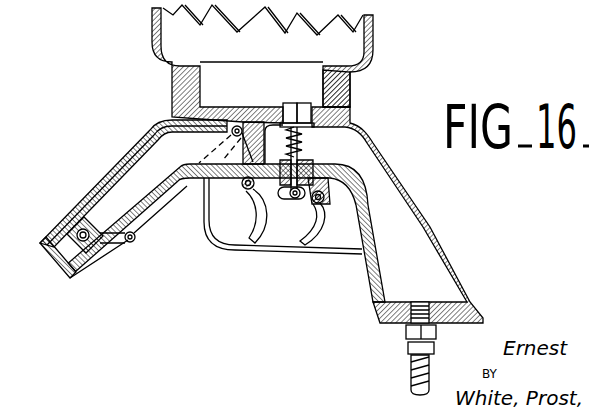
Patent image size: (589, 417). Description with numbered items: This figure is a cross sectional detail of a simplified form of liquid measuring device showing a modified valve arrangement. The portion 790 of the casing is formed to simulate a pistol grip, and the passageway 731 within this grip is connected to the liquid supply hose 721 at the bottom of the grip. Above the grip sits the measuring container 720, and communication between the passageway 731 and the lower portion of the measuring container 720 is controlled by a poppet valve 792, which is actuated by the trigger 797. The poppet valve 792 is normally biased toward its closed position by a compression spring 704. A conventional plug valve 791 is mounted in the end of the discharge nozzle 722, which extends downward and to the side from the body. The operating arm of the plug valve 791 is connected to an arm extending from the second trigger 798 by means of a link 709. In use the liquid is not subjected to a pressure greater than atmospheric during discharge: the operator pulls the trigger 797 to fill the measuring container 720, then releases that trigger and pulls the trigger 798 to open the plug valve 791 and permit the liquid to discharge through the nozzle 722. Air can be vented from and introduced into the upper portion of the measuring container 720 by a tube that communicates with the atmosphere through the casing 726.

The measuring container 720 is at (420, 59).
The liquid supply hose 721 is at (416, 362).
The discharge nozzle 722 is at (76, 271).
The casing 726 is at (351, 108).
The compression spring 704 is at (305, 145).
The link 709 is at (152, 215).
The passageway 731 is at (413, 245).
The portion of the casing 790 is at (428, 207).
The plug valve 791 is at (74, 228).
The poppet valve 792 is at (287, 103).
The trigger 797 is at (322, 216).
The trigger 798 is at (265, 214).